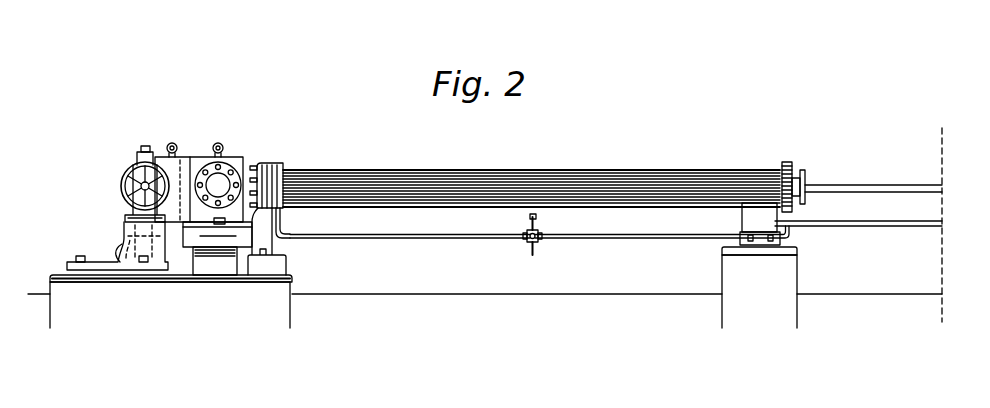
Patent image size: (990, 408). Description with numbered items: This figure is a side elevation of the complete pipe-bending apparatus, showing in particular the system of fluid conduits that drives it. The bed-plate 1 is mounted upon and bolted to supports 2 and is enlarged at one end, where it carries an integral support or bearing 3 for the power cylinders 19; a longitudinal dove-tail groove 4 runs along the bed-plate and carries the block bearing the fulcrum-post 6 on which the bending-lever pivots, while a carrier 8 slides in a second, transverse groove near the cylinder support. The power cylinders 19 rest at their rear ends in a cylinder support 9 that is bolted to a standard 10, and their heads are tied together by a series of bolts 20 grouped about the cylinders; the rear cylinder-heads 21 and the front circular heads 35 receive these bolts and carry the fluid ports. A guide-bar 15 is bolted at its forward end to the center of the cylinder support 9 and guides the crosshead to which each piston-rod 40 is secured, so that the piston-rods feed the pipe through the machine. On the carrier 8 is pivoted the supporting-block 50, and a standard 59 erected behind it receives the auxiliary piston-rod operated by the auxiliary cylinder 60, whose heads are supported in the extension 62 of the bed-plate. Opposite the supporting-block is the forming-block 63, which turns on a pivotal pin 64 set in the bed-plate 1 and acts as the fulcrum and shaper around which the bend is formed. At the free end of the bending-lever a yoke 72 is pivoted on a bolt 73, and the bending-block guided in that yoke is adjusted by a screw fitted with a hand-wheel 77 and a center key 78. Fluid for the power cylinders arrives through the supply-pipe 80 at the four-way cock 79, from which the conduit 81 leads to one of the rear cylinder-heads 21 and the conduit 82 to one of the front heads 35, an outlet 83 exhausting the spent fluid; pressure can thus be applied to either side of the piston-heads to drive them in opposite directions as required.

The bed-plate 1 is at (122, 247).
The supports 2 is at (58, 275).
The integral support or bearing 3 is at (276, 215).
The dove-tail groove 4 is at (108, 222).
The fulcrum-post 6 is at (118, 262).
The carrier 8 is at (192, 232).
The cylinder support 9 is at (760, 224).
The standard 10 is at (722, 267).
The guide-bar 15 is at (860, 222).
The power cylinders 19 is at (460, 170).
The bolts 20 is at (533, 171).
The rear cylinder-heads 21 is at (788, 162).
The circular heads 35 is at (268, 164).
The piston-rod 40 is at (866, 185).
The supporting-block 50 is at (202, 157).
The standard 59 is at (208, 235).
The auxiliary cylinder 60 is at (224, 160).
The extension 62 is at (238, 248).
The forming-block 63 is at (188, 156).
The pivotal pin 64 is at (152, 266).
The yoke 72 is at (136, 160).
The bolt 73 is at (145, 148).
The hand-wheel 77 is at (123, 178).
The center key 78 is at (141, 187).
The four-way cock 79 is at (540, 242).
The supply-pipe 80 is at (530, 254).
The conduit 81 is at (654, 239).
The conduit 82 is at (412, 239).
The outlet 83 is at (537, 217).